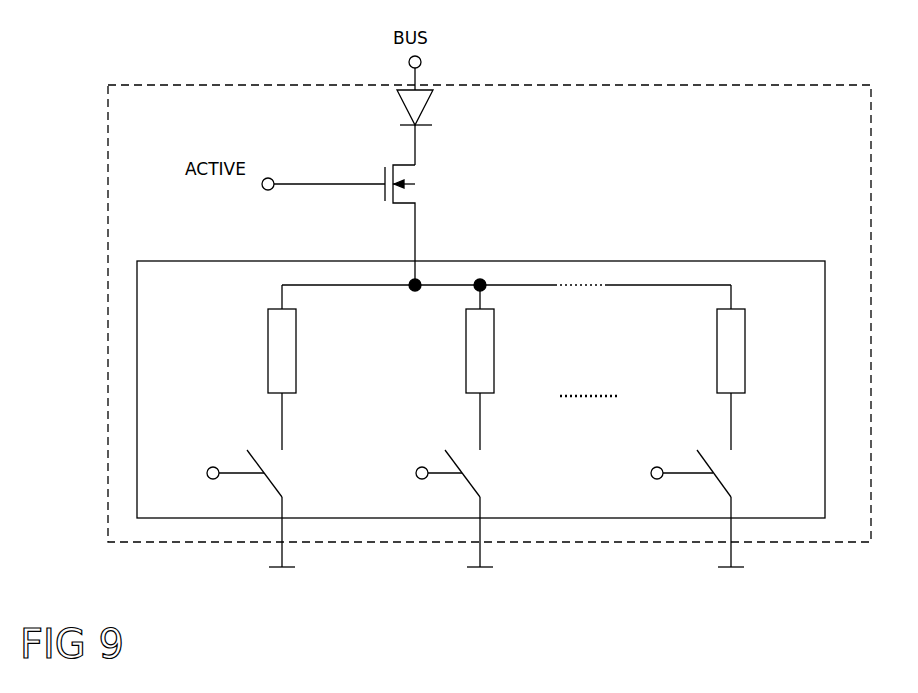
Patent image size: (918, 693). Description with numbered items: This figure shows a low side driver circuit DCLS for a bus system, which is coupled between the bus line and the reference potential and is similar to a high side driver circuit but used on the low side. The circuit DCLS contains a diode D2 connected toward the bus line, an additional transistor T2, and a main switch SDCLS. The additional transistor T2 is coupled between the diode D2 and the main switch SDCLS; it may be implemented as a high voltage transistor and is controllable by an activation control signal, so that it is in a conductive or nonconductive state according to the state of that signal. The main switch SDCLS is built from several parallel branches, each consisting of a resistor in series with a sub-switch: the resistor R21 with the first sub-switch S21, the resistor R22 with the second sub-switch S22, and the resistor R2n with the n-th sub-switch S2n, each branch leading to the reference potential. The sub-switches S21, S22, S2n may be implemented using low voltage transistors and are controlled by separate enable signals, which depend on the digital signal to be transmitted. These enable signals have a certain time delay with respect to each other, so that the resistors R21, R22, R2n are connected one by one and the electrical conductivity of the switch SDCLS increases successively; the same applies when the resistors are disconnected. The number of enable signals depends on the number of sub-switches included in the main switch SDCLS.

The low side driver circuit DCLS is at (489, 301).
The main switch SDCLS is at (481, 373).
The diode D2 is at (432, 127).
The additional transistor T2 is at (425, 225).
The resistor R21 is at (259, 367).
The resistor R22 is at (453, 367).
The resistor R2n is at (701, 367).
The first sub-switch S21 is at (235, 520).
The second sub-switch S22 is at (435, 520).
The n-th sub-switch S2n is at (678, 520).